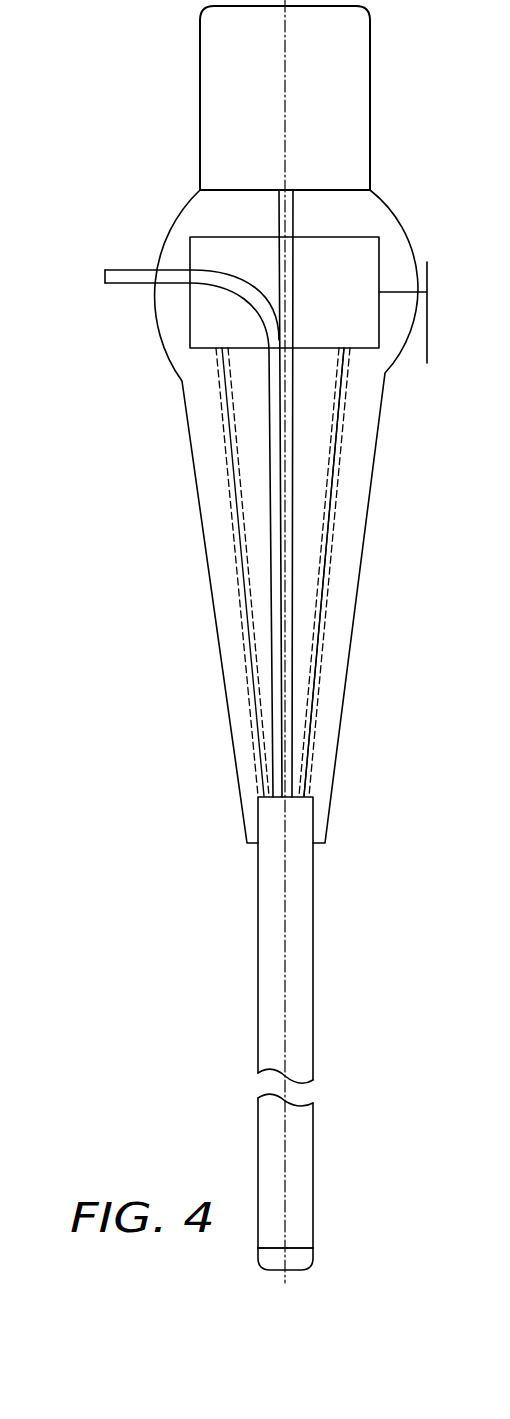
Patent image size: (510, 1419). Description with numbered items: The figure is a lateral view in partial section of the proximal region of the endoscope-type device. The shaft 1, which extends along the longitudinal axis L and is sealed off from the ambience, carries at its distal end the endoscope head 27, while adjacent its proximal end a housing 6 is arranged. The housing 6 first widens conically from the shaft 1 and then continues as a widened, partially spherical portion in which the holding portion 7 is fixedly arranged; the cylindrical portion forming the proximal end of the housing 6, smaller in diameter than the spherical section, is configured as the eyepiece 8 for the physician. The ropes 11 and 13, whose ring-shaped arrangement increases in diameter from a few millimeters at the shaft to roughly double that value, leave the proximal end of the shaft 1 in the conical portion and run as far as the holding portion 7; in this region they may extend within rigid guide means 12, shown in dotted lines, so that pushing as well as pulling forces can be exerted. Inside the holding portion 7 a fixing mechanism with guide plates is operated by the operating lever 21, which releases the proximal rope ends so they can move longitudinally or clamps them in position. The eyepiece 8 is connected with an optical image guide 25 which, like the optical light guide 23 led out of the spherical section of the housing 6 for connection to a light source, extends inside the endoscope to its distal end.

The eyepiece 8 is at (355, 110).
The holding portion 7 is at (358, 247).
The optical image guide 25 is at (278, 211).
The optical light guide 23 is at (118, 271).
The operating lever 21 is at (428, 277).
The housing 6 is at (166, 367).
The rope 11 is at (340, 466).
The rope 13 is at (324, 572).
The rigid guide means 12 is at (338, 538).
The shaft 1 is at (268, 993).
The longitudinal axis L is at (283, 927).
The endoscope head 27 is at (297, 1262).